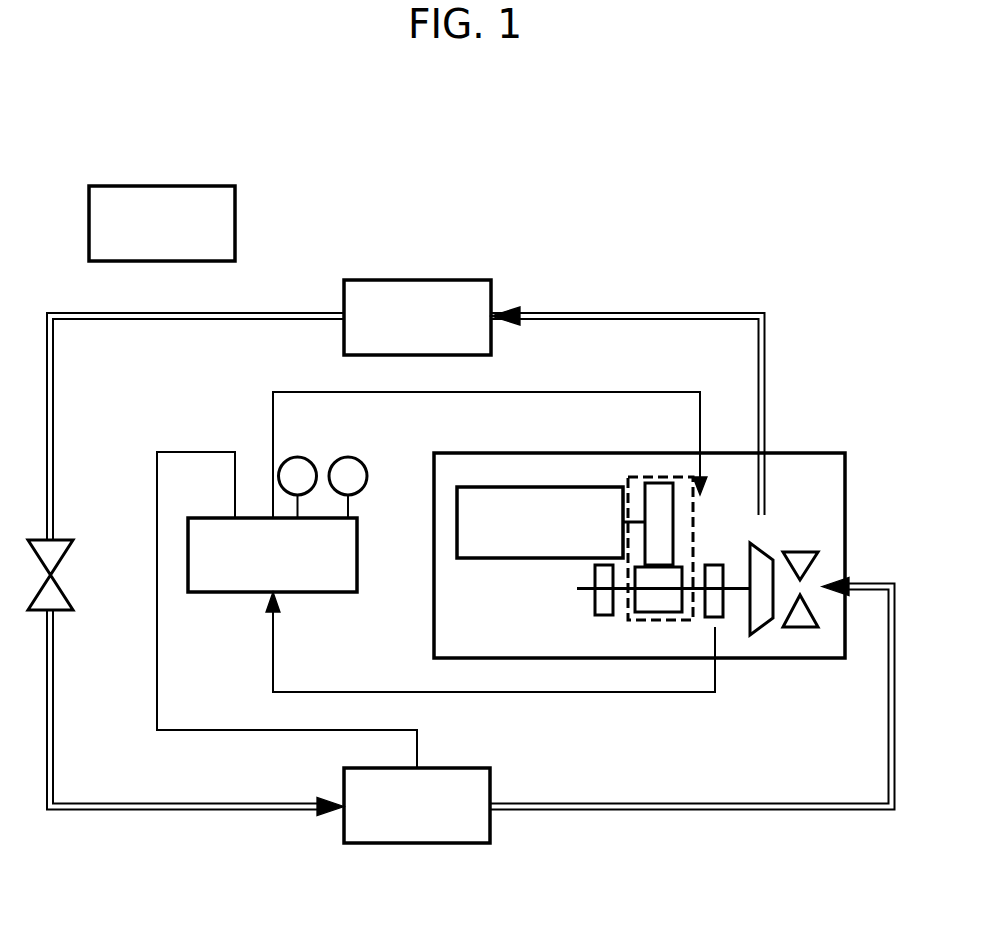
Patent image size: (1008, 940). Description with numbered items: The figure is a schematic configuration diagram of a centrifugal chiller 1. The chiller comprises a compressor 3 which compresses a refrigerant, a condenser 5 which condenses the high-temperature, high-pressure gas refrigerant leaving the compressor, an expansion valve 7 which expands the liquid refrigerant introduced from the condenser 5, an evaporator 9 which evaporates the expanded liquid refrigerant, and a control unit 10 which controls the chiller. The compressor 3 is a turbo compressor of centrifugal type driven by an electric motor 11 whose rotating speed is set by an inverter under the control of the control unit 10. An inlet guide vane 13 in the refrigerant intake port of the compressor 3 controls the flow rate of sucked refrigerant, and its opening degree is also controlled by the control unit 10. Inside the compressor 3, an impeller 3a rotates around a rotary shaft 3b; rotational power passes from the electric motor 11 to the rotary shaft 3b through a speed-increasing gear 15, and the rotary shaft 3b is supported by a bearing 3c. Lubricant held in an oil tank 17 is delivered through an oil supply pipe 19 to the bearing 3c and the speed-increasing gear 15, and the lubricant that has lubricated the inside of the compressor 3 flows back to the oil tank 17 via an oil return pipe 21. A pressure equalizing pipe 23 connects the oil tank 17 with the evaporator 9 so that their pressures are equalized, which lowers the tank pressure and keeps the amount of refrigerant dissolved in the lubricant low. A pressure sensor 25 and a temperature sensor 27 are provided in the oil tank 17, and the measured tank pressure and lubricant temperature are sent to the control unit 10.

The centrifugal chiller 1 is at (682, 198).
The compressor 3 is at (805, 452).
The impeller 3a is at (766, 640).
The rotary shaft 3b is at (733, 580).
The bearing 3c is at (603, 618).
The condenser 5 is at (415, 279).
The expansion valve 7 is at (63, 537).
The evaporator 9 is at (415, 845).
The control unit 10 is at (158, 185).
The electric motor 11 is at (490, 560).
The inlet guide vane 13 is at (807, 630).
The speed-increasing gear 15 is at (657, 478).
The oil tank 17 is at (307, 593).
The oil supply pipe 19 is at (600, 391).
The oil return pipe 21 is at (382, 690).
The pressure equalizing pipe 23 is at (210, 728).
The pressure sensor 25 is at (296, 455).
The temperature sensor 27 is at (346, 455).